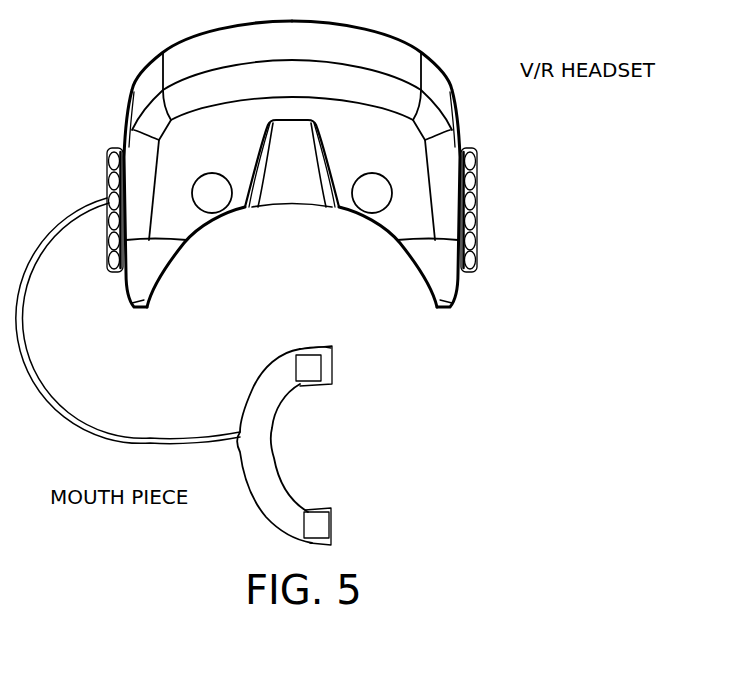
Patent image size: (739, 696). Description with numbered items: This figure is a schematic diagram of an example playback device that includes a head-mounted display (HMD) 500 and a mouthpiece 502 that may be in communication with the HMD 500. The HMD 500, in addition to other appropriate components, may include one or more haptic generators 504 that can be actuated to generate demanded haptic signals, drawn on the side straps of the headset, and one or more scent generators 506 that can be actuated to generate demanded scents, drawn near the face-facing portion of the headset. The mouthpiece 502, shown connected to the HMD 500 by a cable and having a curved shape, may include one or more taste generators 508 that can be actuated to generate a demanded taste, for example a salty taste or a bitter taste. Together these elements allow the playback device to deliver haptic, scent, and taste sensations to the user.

The head-mounted display 500 is at (112, 45).
The mouthpiece 502 is at (241, 374).
The haptic generator 504 is at (457, 282).
The scent generator 506 is at (365, 214).
The taste generator 508 is at (332, 365).